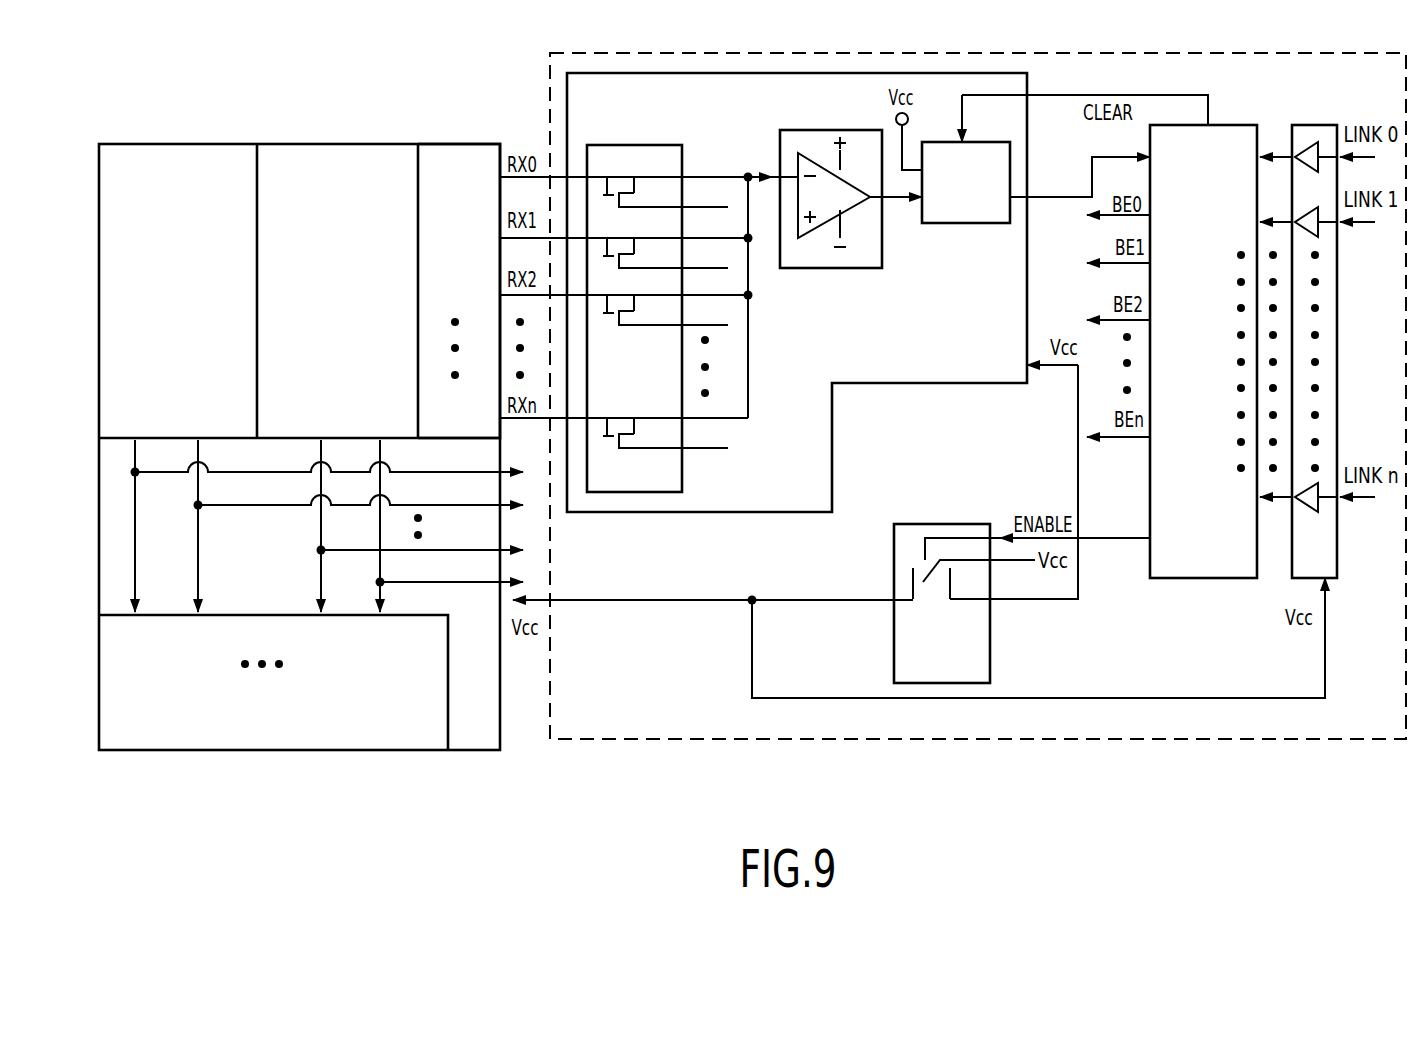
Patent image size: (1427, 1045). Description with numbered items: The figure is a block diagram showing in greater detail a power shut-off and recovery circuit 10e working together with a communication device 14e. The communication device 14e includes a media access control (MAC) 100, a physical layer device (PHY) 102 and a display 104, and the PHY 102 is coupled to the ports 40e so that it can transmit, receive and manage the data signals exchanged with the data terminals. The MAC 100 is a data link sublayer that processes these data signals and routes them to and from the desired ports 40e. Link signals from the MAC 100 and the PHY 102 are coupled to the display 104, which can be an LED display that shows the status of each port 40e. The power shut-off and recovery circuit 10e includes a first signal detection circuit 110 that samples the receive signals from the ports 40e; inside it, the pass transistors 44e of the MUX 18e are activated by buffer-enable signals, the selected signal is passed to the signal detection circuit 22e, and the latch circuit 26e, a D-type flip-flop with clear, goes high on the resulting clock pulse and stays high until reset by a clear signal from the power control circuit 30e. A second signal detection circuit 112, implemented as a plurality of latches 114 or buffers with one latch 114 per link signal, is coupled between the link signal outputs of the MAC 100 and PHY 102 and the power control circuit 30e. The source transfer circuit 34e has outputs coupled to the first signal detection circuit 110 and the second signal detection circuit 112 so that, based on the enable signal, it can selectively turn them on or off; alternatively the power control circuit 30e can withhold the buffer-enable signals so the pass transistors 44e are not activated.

The power shut-off and recovery circuit 10e is at (550, 88).
The communication device 14e is at (505, 757).
The MUX 18e is at (632, 495).
The signal detection circuit 22e is at (810, 269).
The latch circuit 26e is at (970, 224).
The power control circuit 30e is at (1200, 580).
The source transfer circuit 34e is at (990, 643).
The ports 40e is at (462, 143).
The pass transistors 44e is at (632, 186).
The media access control (MAC) 100 is at (168, 143).
The physical layer device (PHY) 102 is at (383, 143).
The display 104 is at (410, 733).
The first signal detection circuit 110 is at (928, 384).
The second signal detection circuit 112 is at (1339, 580).
The latch 114 is at (1302, 146).